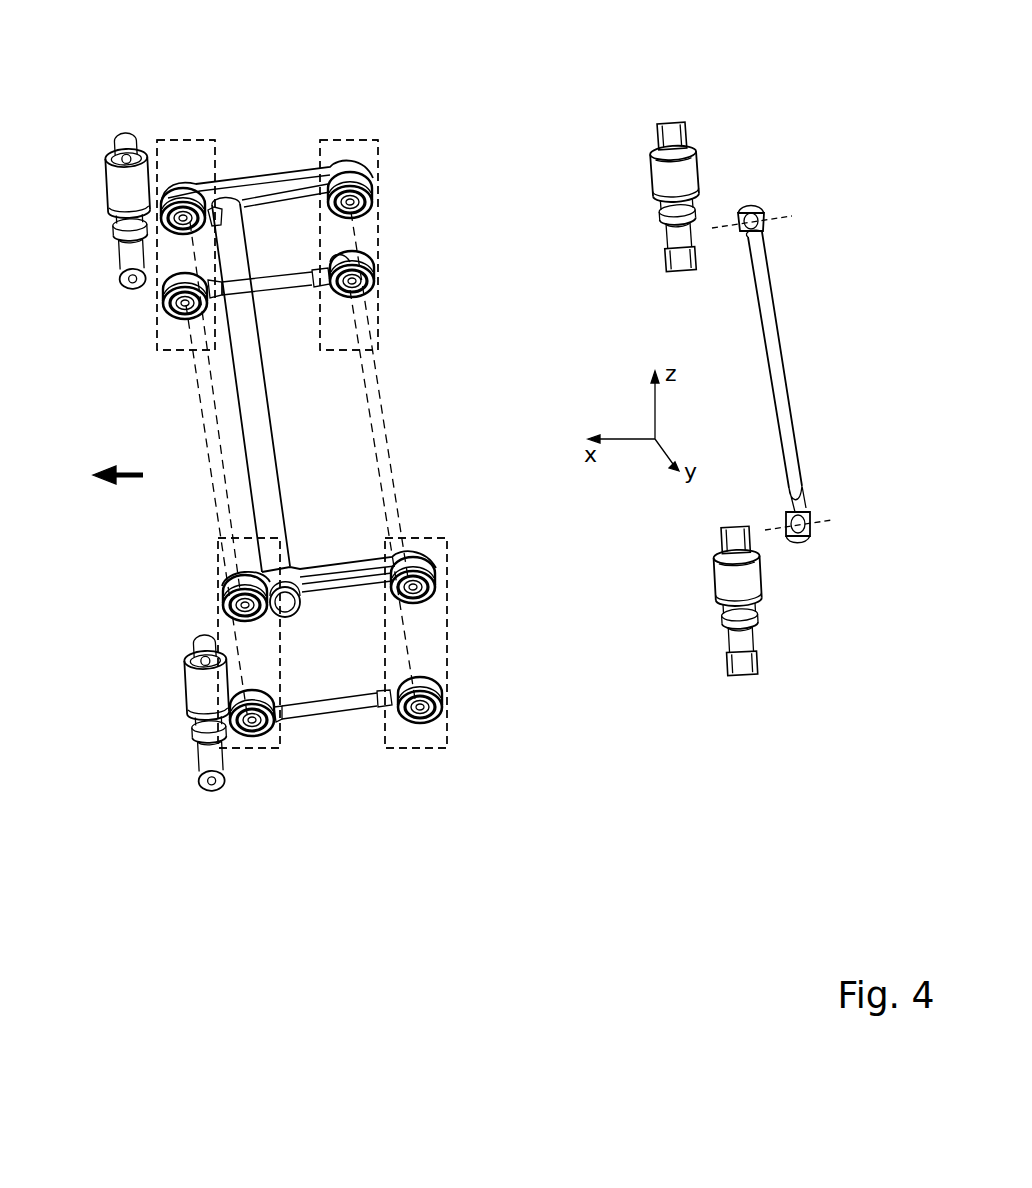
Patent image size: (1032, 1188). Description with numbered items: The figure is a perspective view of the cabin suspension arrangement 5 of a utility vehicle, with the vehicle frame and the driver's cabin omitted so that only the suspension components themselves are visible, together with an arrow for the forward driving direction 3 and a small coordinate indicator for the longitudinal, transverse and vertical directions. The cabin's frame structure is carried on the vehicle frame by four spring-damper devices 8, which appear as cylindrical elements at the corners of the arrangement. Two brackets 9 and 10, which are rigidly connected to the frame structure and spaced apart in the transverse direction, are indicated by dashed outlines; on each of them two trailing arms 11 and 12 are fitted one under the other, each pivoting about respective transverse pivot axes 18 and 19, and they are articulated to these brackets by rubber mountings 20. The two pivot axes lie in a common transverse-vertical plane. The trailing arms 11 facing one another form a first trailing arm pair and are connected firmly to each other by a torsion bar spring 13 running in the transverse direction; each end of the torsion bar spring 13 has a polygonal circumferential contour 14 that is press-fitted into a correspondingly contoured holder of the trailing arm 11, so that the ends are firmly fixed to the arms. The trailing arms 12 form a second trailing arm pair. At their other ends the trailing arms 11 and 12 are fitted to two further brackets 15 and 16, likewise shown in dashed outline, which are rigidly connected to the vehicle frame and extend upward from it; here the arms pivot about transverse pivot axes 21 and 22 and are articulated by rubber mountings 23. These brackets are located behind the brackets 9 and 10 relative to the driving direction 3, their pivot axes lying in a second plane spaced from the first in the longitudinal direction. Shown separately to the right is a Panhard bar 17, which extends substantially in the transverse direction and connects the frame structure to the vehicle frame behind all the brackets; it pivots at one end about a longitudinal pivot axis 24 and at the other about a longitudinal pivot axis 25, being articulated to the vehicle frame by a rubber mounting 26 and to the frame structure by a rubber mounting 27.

The forward driving direction 3 is at (126, 468).
The cabin suspension arrangement 5 is at (505, 112).
The spring-damper devices 8 is at (116, 190).
The bracket 9 is at (273, 748).
The bracket 10 is at (192, 140).
The trailing arm 11 is at (270, 184).
The trailing arm 12 is at (380, 383).
The torsion bar spring 13 is at (245, 376).
The polygonal circumferential contour 14 is at (275, 630).
The bracket 15 is at (447, 732).
The bracket 16 is at (378, 255).
The Panhard bar 17 is at (777, 377).
The pivot axis 18 is at (213, 405).
The pivot axis 19 is at (213, 483).
The rubber mountings 20 is at (161, 140).
The pivot axis 21 is at (387, 432).
The pivot axis 22 is at (393, 482).
The rubber mountings 23 is at (377, 193).
The pivot axis 24 is at (822, 520).
The pivot axis 25 is at (783, 212).
The rubber mounting 26 is at (812, 533).
The rubber mounting 27 is at (765, 222).